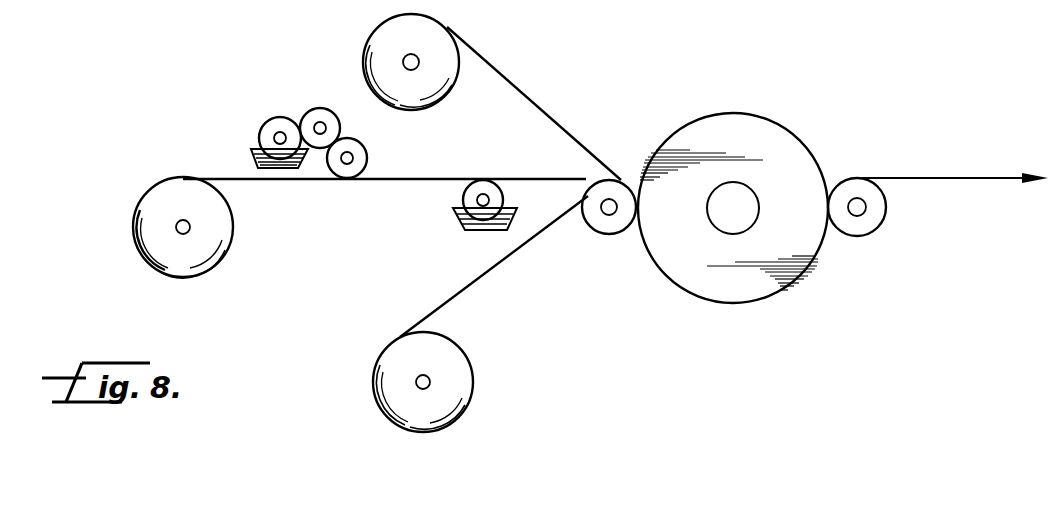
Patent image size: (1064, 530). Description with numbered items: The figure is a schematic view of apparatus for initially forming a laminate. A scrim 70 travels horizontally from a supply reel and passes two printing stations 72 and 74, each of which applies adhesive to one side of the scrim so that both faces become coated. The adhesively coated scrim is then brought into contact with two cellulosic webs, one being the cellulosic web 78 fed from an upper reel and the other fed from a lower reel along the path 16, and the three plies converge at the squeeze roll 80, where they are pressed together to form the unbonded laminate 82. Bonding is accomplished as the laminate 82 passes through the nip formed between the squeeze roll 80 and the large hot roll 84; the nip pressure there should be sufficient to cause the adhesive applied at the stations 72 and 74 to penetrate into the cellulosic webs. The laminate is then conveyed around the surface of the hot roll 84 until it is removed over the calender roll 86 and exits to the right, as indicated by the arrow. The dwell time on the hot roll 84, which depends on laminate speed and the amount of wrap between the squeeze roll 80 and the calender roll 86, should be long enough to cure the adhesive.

The scrim 70 is at (263, 181).
The printing station 72 is at (284, 116).
The printing station 74 is at (453, 197).
The cellulosic web 78 is at (544, 68).
The lower web 16 is at (485, 273).
The squeeze roll 80 is at (600, 229).
The laminate 82 is at (626, 178).
The hot roll 84 is at (793, 149).
The calender roll 86 is at (855, 188).